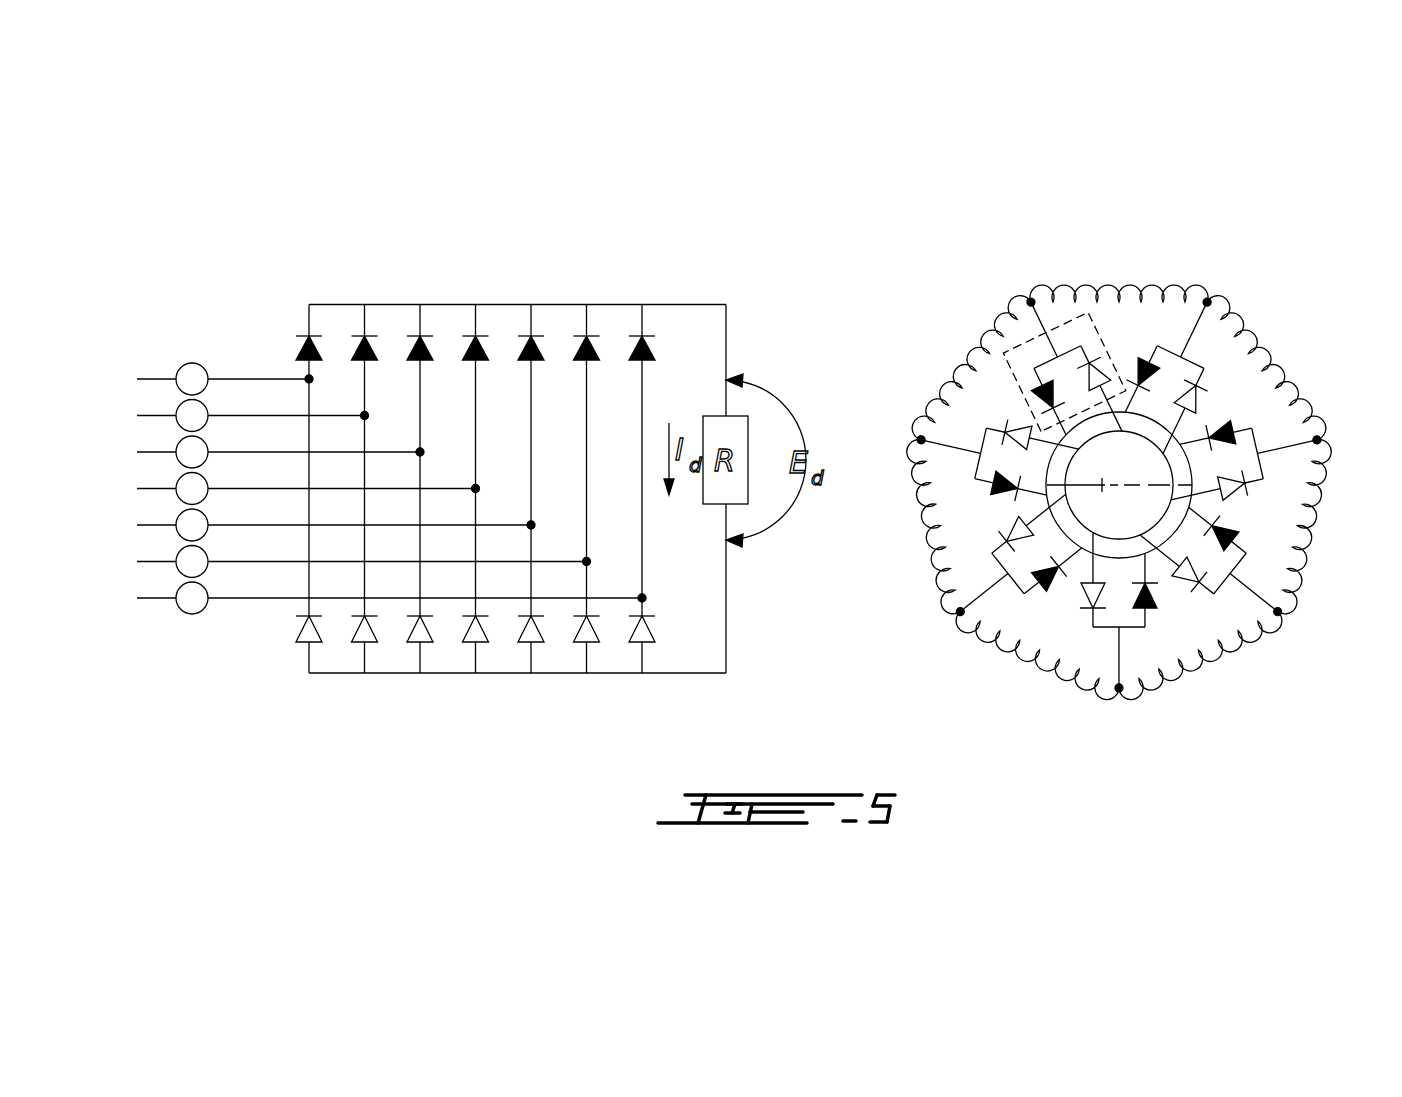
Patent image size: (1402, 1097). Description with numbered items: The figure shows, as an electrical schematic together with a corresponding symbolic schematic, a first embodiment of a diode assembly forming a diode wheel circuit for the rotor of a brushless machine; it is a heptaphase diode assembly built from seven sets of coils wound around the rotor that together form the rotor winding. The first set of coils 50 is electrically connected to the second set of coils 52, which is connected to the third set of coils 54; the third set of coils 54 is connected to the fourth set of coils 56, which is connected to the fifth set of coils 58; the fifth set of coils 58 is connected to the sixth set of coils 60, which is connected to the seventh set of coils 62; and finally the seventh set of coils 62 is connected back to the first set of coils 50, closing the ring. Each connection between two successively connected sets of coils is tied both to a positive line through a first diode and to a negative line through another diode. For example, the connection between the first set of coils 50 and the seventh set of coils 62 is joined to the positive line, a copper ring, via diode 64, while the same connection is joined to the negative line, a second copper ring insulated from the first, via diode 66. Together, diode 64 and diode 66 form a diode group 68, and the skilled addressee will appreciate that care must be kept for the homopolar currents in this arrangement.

The first set of coils 50 is at (178, 368).
The second set of coils 52 is at (178, 404).
The third set of coils 54 is at (178, 441).
The fourth set of coils 56 is at (178, 478).
The fifth set of coils 58 is at (178, 514).
The sixth set of coils 60 is at (178, 550).
The seventh set of coils 62 is at (178, 587).
The diode 64 is at (296, 351).
The diode 66 is at (298, 632).
The diode group 68 is at (1120, 300).